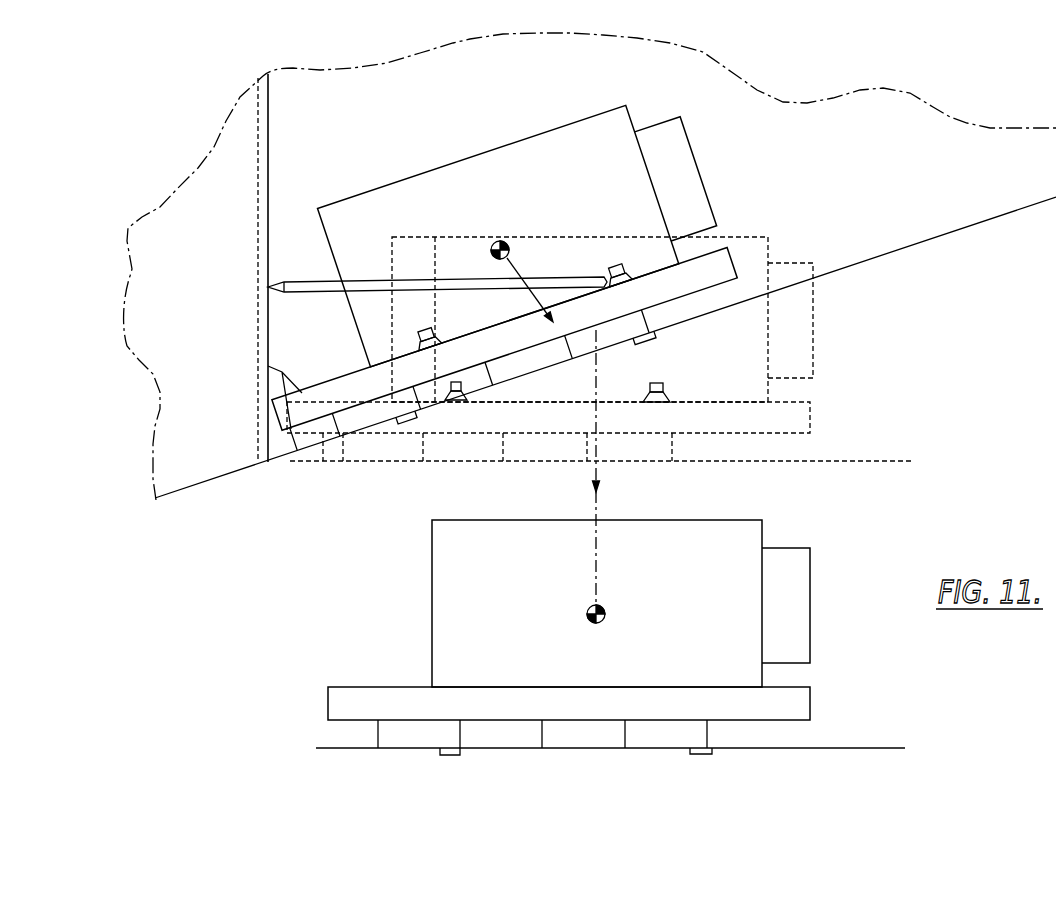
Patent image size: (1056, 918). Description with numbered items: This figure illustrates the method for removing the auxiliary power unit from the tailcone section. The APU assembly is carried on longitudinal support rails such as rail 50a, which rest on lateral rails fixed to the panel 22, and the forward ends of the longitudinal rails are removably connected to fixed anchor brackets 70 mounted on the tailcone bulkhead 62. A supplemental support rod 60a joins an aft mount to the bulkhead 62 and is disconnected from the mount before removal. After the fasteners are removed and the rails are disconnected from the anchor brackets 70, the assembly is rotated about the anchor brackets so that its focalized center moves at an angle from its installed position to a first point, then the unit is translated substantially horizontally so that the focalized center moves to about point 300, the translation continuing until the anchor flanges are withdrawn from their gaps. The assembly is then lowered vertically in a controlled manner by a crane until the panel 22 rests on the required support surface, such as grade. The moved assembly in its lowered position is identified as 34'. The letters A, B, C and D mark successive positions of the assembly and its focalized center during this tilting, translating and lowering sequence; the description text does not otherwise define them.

The tailcone bulkhead 62 is at (258, 112).
The supplemental support rod 60a is at (303, 280).
The point 300 is at (593, 322).
The anchor bracket 70 is at (275, 393).
The moved assembly 34' is at (605, 347).
The panel 22 is at (823, 466).
The longitudinal support rail 50a is at (328, 708).
The position A is at (532, 191).
The center of gravity B is at (522, 281).
The position C is at (638, 366).
The center of gravity D is at (608, 600).